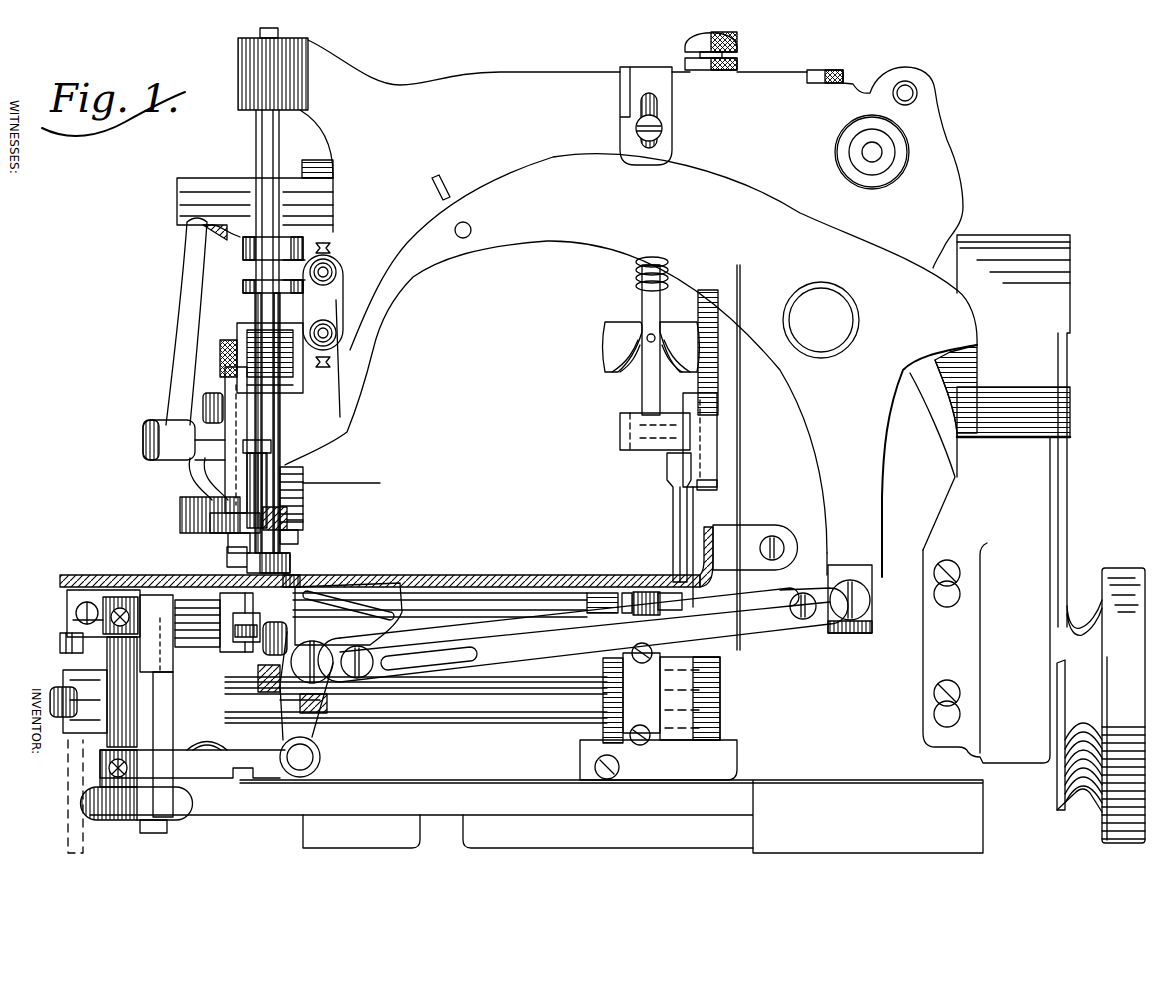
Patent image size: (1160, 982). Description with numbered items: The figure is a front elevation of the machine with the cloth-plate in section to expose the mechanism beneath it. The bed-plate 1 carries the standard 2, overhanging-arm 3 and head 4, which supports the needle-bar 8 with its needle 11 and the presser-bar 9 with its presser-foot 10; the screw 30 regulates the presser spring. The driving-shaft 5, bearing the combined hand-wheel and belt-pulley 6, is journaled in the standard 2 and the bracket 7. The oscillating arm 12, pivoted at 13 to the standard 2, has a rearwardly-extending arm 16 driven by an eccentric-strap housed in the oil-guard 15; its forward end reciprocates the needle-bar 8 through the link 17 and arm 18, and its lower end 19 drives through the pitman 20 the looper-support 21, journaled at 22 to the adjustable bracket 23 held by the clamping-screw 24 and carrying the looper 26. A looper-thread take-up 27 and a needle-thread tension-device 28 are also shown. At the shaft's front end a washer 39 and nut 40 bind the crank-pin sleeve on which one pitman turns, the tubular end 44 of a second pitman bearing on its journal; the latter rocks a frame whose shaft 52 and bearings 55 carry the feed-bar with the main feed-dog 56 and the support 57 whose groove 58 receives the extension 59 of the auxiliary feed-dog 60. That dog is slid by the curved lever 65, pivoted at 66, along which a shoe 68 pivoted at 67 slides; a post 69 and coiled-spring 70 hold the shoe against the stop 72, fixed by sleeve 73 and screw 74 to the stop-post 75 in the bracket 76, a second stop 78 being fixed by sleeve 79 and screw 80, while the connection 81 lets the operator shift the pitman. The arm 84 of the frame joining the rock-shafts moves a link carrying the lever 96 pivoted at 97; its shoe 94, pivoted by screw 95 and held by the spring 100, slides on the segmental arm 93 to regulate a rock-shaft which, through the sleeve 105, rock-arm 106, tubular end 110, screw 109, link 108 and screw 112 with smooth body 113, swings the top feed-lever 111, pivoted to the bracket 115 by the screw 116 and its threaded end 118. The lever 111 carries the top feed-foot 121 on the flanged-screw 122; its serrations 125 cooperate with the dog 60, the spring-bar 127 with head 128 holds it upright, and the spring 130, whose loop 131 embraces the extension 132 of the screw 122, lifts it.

The bed-plate 1 is at (604, 808).
The vertical standard 2 is at (942, 600).
The overhanging-arm 3 is at (635, 154).
The head 4 is at (368, 394).
The driving-shaft 5 is at (522, 712).
The combined hand-wheel and belt-pulley 6 is at (1114, 569).
The bracket 7 is at (196, 713).
The needle-bar 8 is at (280, 140).
The presser-bar 9 is at (255, 129).
The presser-foot 10 is at (285, 551).
The needle 11 is at (300, 575).
The oscillating arm 12 is at (631, 353).
The pivot 13 is at (828, 345).
The cover or oil-guard 15 is at (1013, 431).
The rearwardly-extending arm 16 is at (929, 445).
The link 17 is at (328, 293).
The arm 18 is at (296, 262).
The lower end of lever 19 is at (835, 513).
The pitman 20 is at (548, 640).
The looper-support 21 is at (288, 710).
The journal 22 is at (310, 758).
The adjustable bracket 23 is at (267, 765).
The clamping-screw 24 is at (210, 742).
The thread-carrying looper 26 is at (373, 575).
The take-up and tension-device 27 is at (612, 690).
The tension-device 28 is at (834, 152).
The screw 30 is at (738, 50).
The washer 39 is at (65, 720).
The nut 40 is at (50, 696).
The tubular end of pitman 44 is at (107, 740).
The shaft 52 is at (436, 605).
The bearings 55 is at (503, 583).
The feed-dog 56 is at (290, 576).
The support 57 is at (222, 647).
The groove 58 is at (257, 675).
The lateral extension 59 is at (290, 628).
The auxiliary feed-dog 60 is at (258, 608).
The curved lever 65 is at (175, 697).
The pivot 66 is at (193, 803).
The pivotal connection 67 is at (60, 642).
The shoe 68 is at (156, 633).
The post 69 is at (73, 621).
The coiled-spring 70 is at (74, 611).
The stop 72 is at (110, 608).
The sleeve 73 is at (120, 608).
The screw 74 is at (113, 580).
The stop-post 75 is at (110, 748).
The bracket 76 is at (150, 803).
The second stop 78 is at (110, 768).
The sleeve 79 is at (97, 778).
The screw 80 is at (127, 762).
The connection 81 is at (84, 848).
The upwardly-projecting arm 84 is at (672, 516).
The segmental arm 93 is at (714, 393).
The shoe 94 is at (690, 462).
The screw 95 is at (618, 423).
The lever 96 is at (644, 299).
The pivot 97 is at (604, 331).
The spring 100 is at (655, 266).
The elongated sleeve 105 is at (186, 208).
The rock-arm 106 is at (180, 335).
The link 108 is at (190, 463).
The screw 109 is at (147, 452).
The tubular end 110 is at (147, 421).
The top feed-lever 111 is at (225, 375).
The screw 112 is at (180, 503).
The smooth body 113 is at (187, 483).
The bracket 115 is at (302, 390).
The screw 116 is at (303, 375).
The screw-threaded end 118 is at (219, 357).
The top feed-foot 121 is at (228, 540).
The flanged-screw 122 is at (380, 488).
The serrations 125 is at (290, 530).
The spring-bar 127 is at (293, 453).
The head 128 is at (270, 443).
The spring 130 is at (303, 483).
The elongated loop 131 is at (303, 505).
The extension 132 is at (317, 520).